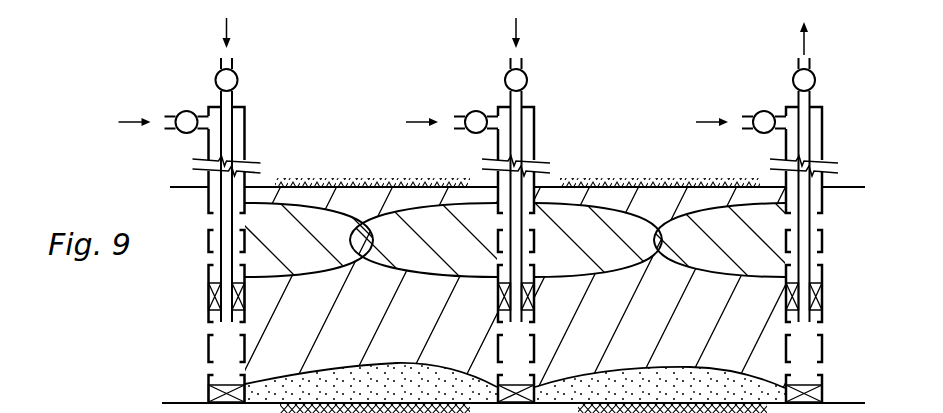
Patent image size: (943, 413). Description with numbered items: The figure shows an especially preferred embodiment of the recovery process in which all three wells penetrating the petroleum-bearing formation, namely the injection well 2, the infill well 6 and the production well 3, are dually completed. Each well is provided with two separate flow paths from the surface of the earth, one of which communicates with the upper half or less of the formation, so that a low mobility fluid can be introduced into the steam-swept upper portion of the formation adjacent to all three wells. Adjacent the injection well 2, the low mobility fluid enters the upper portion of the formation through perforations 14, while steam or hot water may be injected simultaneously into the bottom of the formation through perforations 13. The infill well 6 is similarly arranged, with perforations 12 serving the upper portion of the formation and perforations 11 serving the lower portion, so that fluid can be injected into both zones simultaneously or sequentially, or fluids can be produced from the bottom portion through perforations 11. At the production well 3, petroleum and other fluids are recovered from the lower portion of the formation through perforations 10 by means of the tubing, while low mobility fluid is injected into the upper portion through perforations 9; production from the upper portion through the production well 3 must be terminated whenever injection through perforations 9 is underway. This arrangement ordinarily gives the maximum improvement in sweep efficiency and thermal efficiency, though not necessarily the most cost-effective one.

The injection well 2 is at (247, 134).
The infill well 6 is at (534, 134).
The production well 3 is at (823, 129).
The perforations 9 is at (832, 228).
The perforations 10 is at (832, 330).
The perforations 11 is at (540, 331).
The perforations 12 is at (538, 262).
The perforations 13 is at (205, 369).
The perforations 14 is at (198, 260).